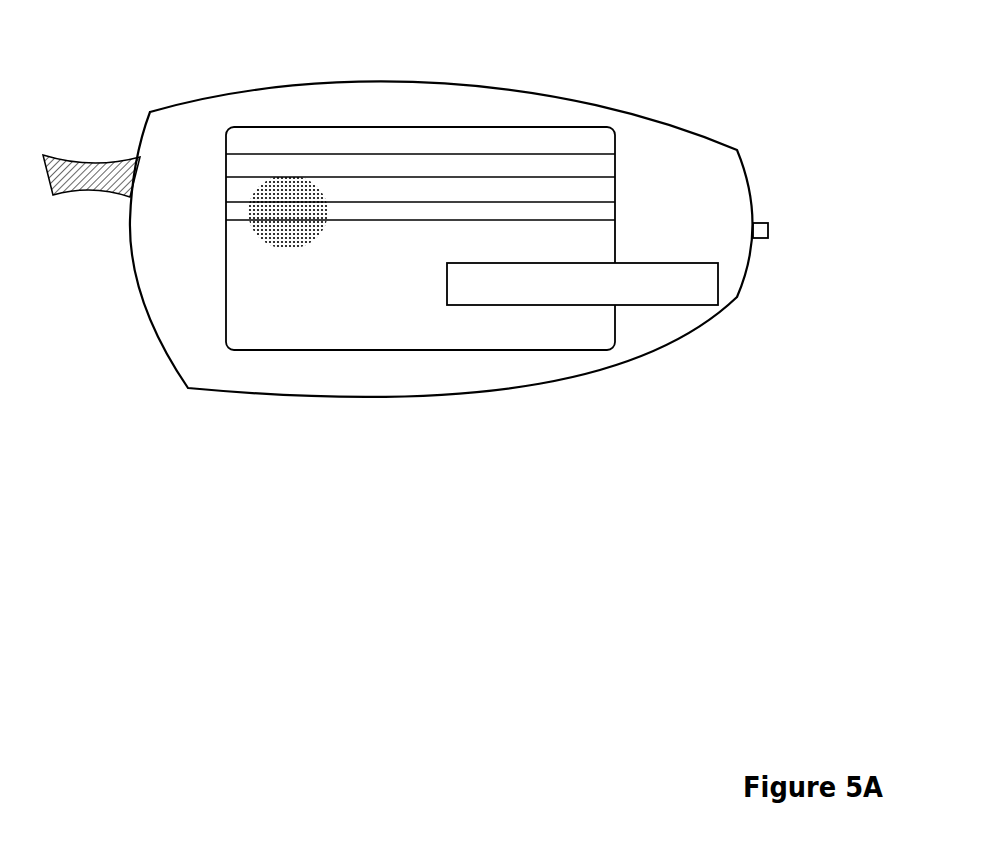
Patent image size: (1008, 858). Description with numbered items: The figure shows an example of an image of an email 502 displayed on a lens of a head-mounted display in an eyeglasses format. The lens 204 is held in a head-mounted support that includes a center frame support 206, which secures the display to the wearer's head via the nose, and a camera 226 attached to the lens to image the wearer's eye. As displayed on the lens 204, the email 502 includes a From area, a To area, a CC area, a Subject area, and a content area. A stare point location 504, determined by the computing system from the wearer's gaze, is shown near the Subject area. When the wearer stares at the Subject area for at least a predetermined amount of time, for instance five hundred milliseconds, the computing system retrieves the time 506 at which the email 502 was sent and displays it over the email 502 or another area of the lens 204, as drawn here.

The left lens 204 is at (450, 405).
The center frame support 206 is at (81, 160).
The camera 226 is at (773, 228).
The email 502 is at (226, 278).
The stare point location 504 is at (325, 192).
The time 506 is at (667, 307).